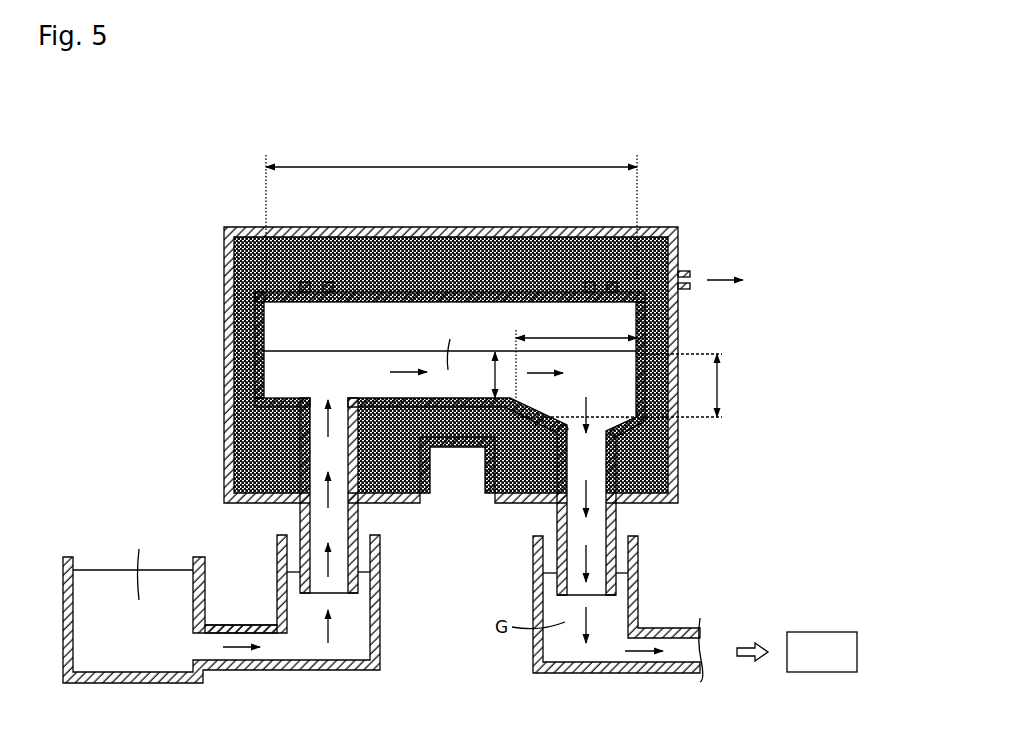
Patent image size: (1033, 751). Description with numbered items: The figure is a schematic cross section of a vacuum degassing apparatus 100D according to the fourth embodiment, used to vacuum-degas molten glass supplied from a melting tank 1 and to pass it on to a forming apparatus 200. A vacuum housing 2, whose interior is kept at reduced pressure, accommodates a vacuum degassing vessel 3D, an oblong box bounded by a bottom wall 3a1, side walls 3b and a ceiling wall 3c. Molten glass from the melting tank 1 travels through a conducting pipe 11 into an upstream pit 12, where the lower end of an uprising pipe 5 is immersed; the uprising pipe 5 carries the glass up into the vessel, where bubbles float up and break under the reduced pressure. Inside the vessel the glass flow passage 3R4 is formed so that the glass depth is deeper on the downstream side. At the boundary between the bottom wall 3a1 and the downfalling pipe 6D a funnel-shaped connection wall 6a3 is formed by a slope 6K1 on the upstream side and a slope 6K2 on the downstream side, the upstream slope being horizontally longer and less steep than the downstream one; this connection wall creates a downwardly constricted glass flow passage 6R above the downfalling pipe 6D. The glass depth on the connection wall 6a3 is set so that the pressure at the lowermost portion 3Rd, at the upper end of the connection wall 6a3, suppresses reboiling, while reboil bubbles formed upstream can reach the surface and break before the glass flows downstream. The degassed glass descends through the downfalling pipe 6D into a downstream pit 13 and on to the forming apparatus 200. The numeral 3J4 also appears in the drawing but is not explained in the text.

The vacuum degassing apparatus 100D is at (716, 224).
The vacuum housing 2 is at (226, 256).
The vacuum degassing vessel 3D is at (258, 330).
The side wall 3b is at (260, 356).
The ceiling wall 3c is at (447, 300).
The glass flow passage 3R4 is at (366, 350).
The lowermost portion 3Rd is at (642, 428).
The bottom wall joint 3J4 is at (380, 397).
The bottom wall 3a1 is at (455, 407).
The uprising pipe 5 is at (300, 458).
The slope on the upstream side 6K1 is at (540, 427).
The slope on the downstream side 6K2 is at (645, 445).
The glass flow passage 6R is at (670, 462).
The downfalling pipe 6D is at (616, 522).
The connection wall 6a3 is at (523, 430).
The melting tank 1 is at (64, 558).
The conducting pipe 11 is at (240, 626).
The upstream pit 12 is at (277, 545).
The downstream pit 13 is at (638, 547).
The forming apparatus 200 is at (823, 631).